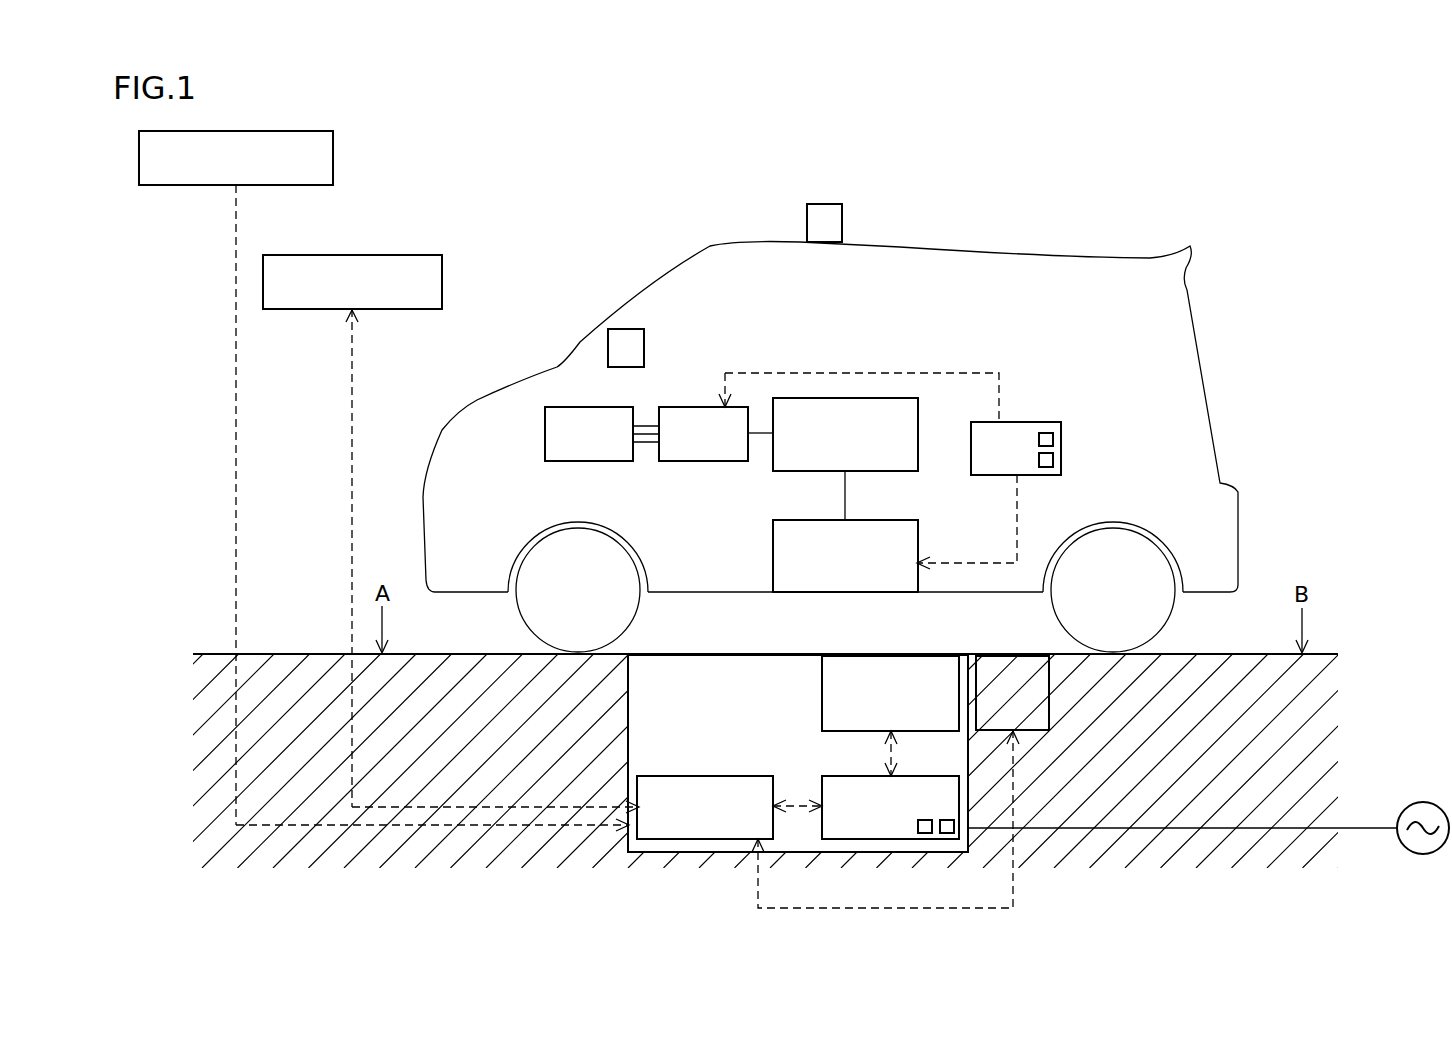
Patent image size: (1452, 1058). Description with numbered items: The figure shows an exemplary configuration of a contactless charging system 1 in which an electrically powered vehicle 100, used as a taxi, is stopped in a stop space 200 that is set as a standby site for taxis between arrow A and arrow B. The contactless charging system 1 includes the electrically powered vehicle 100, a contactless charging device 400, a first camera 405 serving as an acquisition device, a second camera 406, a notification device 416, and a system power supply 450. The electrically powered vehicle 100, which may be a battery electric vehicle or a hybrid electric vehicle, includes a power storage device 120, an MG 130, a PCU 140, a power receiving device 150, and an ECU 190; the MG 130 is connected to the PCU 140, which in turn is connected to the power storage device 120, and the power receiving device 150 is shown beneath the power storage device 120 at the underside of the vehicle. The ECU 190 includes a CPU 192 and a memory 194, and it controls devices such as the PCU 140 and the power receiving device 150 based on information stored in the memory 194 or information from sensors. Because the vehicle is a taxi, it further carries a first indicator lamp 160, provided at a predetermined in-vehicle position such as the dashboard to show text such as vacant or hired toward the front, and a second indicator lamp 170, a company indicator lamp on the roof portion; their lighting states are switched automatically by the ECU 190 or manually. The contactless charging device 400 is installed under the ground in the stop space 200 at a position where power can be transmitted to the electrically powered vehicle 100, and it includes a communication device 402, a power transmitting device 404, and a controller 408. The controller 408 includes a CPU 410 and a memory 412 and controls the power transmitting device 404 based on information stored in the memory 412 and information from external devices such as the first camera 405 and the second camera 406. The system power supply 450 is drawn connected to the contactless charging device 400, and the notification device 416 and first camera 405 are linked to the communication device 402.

The contactless charging system 1 is at (1230, 176).
The electrically powered vehicle 100 is at (830, 433).
The power storage device 120 is at (893, 472).
The MG (Motor Generator) 130 is at (588, 406).
The PCU (Power Control Unit) 140 is at (691, 406).
The power receiving device 150 is at (810, 519).
The first indicator lamp 160 is at (637, 329).
The second indicator lamp 170 is at (822, 204).
The ECU (Electronic Control Unit) 190 is at (1047, 476).
The CPU (Central Processing Unit) 192 is at (1053, 438).
The memory 194 is at (1053, 459).
The stop space 200 is at (1257, 610).
The contactless charging device 400 is at (648, 853).
The communication device 402 is at (723, 776).
The power transmitting device 404 is at (822, 675).
The first camera (acquisition device) 405 is at (280, 131).
The second camera 406 is at (1049, 675).
The controller 408 is at (905, 776).
The CPU (Central Processing Unit) 410 is at (925, 834).
The memory 412 is at (948, 834).
The notification device 416 is at (397, 255).
The system power supply 450 is at (1423, 855).